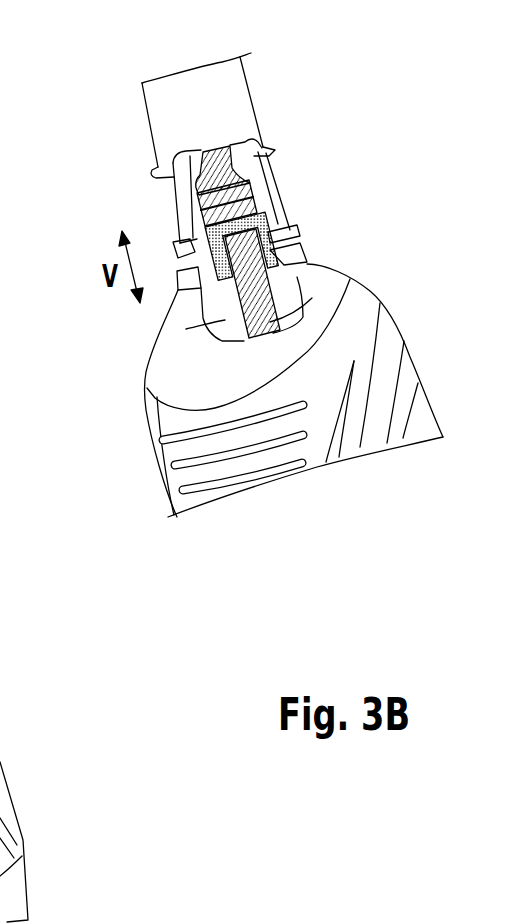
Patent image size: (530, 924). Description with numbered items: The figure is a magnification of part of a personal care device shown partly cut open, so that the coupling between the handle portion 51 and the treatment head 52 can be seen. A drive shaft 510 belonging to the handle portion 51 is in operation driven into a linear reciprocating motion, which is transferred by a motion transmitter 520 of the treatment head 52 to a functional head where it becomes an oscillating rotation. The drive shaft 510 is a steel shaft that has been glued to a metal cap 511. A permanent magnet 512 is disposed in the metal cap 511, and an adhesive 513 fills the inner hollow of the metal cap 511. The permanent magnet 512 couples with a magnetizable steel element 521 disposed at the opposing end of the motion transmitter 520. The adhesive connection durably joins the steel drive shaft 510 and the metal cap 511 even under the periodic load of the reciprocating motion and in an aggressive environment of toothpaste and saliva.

The treatment head 52 is at (147, 115).
The motion transmitter 520 is at (212, 156).
The magnetizable steel element 521 is at (268, 183).
The permanent magnet 512 is at (252, 213).
The metal cap 511 is at (273, 250).
The adhesive 513 is at (308, 264).
The drive shaft 510 is at (186, 329).
The handle portion 51 is at (318, 468).